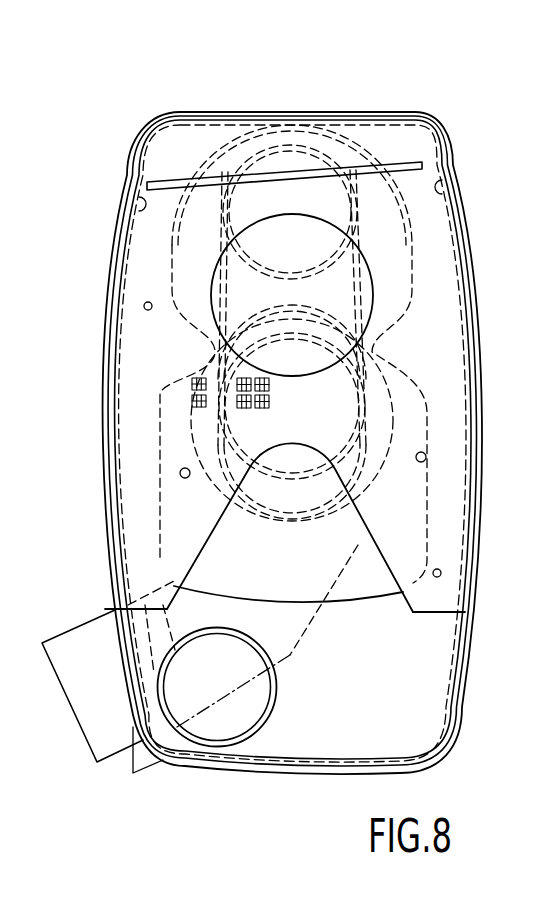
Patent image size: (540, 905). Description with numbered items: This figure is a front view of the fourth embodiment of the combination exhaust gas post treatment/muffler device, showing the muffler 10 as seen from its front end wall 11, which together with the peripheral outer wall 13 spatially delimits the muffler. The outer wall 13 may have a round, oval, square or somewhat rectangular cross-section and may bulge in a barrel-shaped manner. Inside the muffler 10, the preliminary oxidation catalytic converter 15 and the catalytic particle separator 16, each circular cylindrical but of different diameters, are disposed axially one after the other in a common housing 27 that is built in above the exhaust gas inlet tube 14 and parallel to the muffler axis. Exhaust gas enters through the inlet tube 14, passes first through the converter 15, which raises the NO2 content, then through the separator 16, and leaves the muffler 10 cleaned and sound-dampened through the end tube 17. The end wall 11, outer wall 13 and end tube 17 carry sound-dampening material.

The muffler 10 is at (348, 111).
The front end wall 11 is at (438, 348).
The peripheral outer wall 13 is at (470, 230).
The exhaust gas inlet tube 14 is at (203, 733).
The preliminary oxidation catalytic converter 15 is at (240, 402).
The catalytic particle separator 16 is at (192, 380).
The sound-dampening end tube 17 is at (286, 158).
The common housing 27 is at (383, 470).